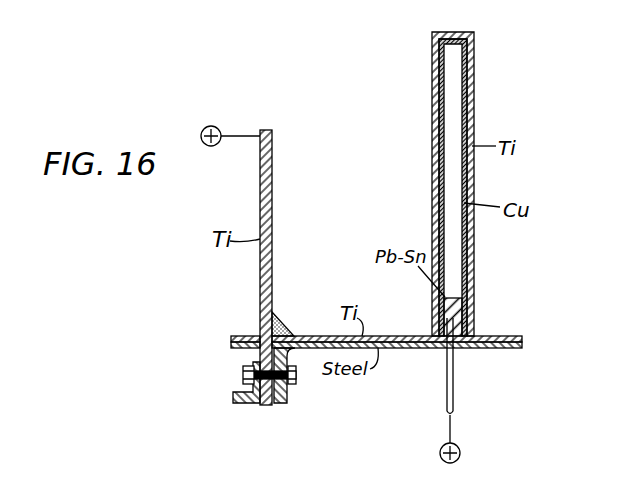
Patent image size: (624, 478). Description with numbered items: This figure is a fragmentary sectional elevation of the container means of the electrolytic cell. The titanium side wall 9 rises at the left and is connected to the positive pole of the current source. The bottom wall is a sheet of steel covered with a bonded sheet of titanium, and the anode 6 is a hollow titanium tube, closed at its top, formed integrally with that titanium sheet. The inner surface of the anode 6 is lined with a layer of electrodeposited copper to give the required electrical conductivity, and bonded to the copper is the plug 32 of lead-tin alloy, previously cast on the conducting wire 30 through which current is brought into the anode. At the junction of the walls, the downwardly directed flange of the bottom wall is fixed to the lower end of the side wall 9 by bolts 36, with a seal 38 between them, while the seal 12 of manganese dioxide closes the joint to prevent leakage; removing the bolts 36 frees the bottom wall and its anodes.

The side wall 9 is at (260, 190).
The seal 12 is at (287, 322).
The anode 6 is at (432, 143).
The plug 32 is at (474, 312).
The conducting wire 30 is at (447, 392).
The seal 38 is at (256, 390).
The bolt 36 is at (296, 384).